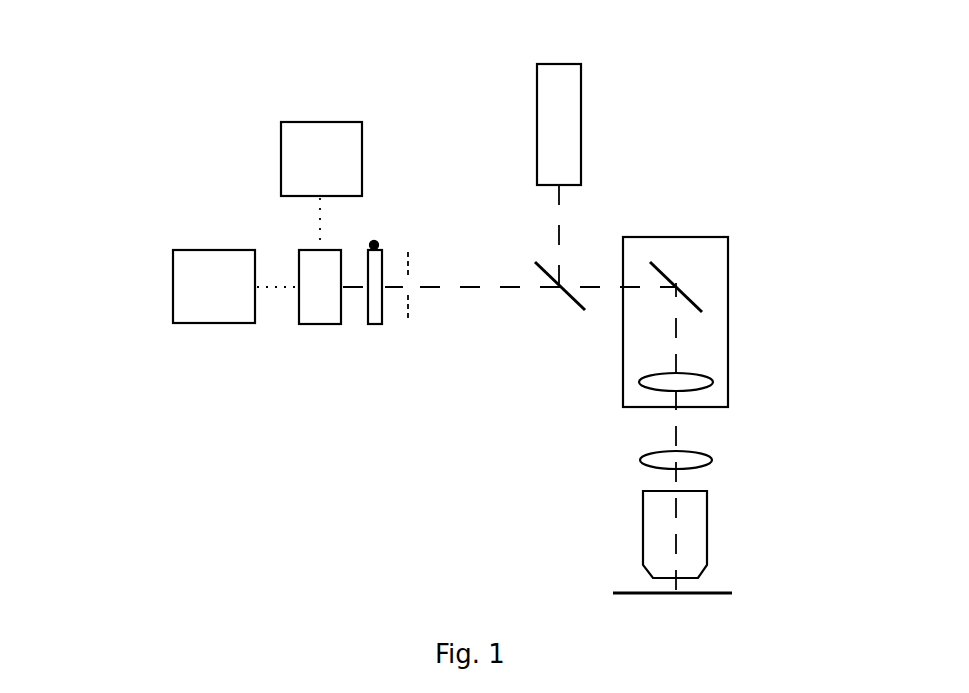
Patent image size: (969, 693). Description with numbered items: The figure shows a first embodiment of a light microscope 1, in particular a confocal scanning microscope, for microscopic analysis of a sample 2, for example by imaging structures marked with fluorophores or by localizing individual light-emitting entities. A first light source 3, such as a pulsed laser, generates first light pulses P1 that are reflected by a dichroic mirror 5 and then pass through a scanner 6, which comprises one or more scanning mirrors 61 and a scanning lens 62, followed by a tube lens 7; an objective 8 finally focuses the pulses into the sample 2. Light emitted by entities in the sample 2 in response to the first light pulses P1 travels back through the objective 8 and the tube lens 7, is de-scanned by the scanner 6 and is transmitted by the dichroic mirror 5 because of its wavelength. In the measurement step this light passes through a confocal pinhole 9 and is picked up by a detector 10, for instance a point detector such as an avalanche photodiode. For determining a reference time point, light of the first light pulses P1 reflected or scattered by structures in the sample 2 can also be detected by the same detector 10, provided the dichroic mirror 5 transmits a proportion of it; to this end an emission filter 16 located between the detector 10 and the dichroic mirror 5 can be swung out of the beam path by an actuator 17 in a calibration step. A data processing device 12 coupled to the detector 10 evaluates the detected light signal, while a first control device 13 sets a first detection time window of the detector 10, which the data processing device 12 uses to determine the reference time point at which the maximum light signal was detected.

The light microscope 1 is at (437, 58).
The sample 2 is at (732, 593).
The first light source 3 is at (581, 120).
The first light pulses P1 is at (559, 205).
The dichroic mirror 5 is at (575, 313).
The scanner 6 is at (680, 236).
The scanning mirrors 61 is at (668, 277).
The scanning lens 62 is at (713, 382).
The tube lens 7 is at (712, 460).
The objective 8 is at (707, 528).
The confocal pinhole 9 is at (426, 313).
The detector 10 is at (320, 316).
The data processing device 12 is at (173, 286).
The first control device 13 is at (323, 122).
The emission filter 16 is at (377, 325).
The actuator 17 is at (378, 242).